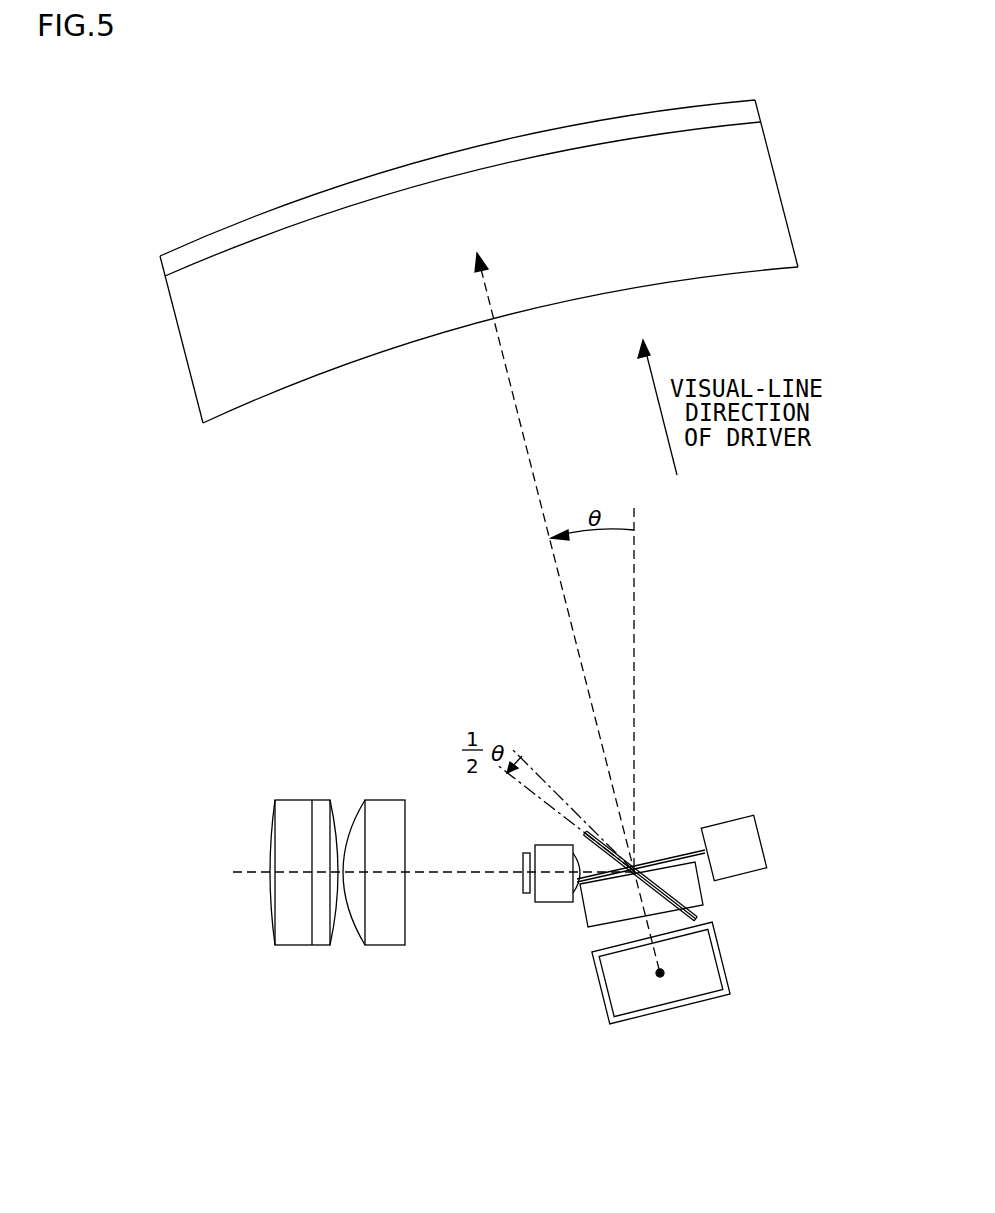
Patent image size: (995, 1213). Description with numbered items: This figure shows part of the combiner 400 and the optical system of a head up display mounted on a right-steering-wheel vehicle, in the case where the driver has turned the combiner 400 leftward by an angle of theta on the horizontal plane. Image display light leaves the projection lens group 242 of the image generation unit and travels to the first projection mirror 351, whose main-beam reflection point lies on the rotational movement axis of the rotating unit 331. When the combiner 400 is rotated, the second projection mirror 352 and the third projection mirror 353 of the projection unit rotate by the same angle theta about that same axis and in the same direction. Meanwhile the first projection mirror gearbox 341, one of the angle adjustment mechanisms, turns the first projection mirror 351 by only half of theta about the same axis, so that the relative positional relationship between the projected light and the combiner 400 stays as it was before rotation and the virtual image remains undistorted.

The combiner 400 is at (765, 188).
The projection lens group 242 is at (418, 990).
The rotating unit 331 is at (668, 811).
The first projection mirror gearbox 341 is at (750, 842).
The first projection mirror 351 is at (689, 901).
The second projection mirror 352 is at (687, 987).
The third projection mirror 353 is at (708, 963).